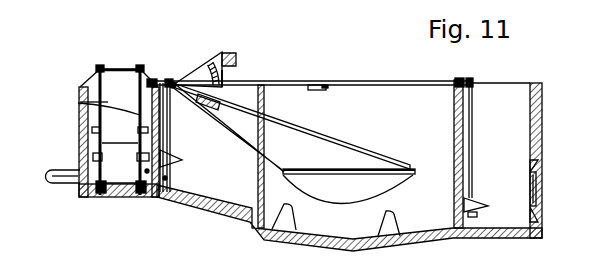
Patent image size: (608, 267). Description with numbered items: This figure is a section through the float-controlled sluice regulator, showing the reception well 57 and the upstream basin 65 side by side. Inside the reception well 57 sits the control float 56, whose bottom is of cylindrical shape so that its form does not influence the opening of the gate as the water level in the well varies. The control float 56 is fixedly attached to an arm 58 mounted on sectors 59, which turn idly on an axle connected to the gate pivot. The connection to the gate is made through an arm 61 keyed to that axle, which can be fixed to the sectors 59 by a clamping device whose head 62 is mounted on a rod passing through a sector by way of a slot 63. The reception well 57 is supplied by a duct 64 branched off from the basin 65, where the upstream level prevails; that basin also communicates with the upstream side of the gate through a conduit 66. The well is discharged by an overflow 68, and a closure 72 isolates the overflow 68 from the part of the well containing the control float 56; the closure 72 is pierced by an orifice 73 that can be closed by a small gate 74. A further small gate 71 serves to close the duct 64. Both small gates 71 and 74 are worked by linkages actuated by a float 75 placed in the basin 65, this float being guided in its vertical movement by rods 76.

The control float 56 is at (337, 197).
The reception well 57 is at (368, 100).
The arm 58 is at (335, 138).
The sectors 59 is at (172, 83).
The arm 61 is at (224, 64).
The head 62 is at (218, 72).
The slot 63 is at (226, 73).
The duct 64 is at (166, 136).
The basin 65 is at (115, 93).
The conduit 66 is at (63, 185).
The overflow 68 is at (537, 190).
The small gate 71 is at (168, 174).
The closure 72 is at (455, 148).
The orifice 73 is at (456, 205).
The small gate 74 is at (472, 219).
The float 75 is at (121, 142).
The rods 76 is at (80, 100).